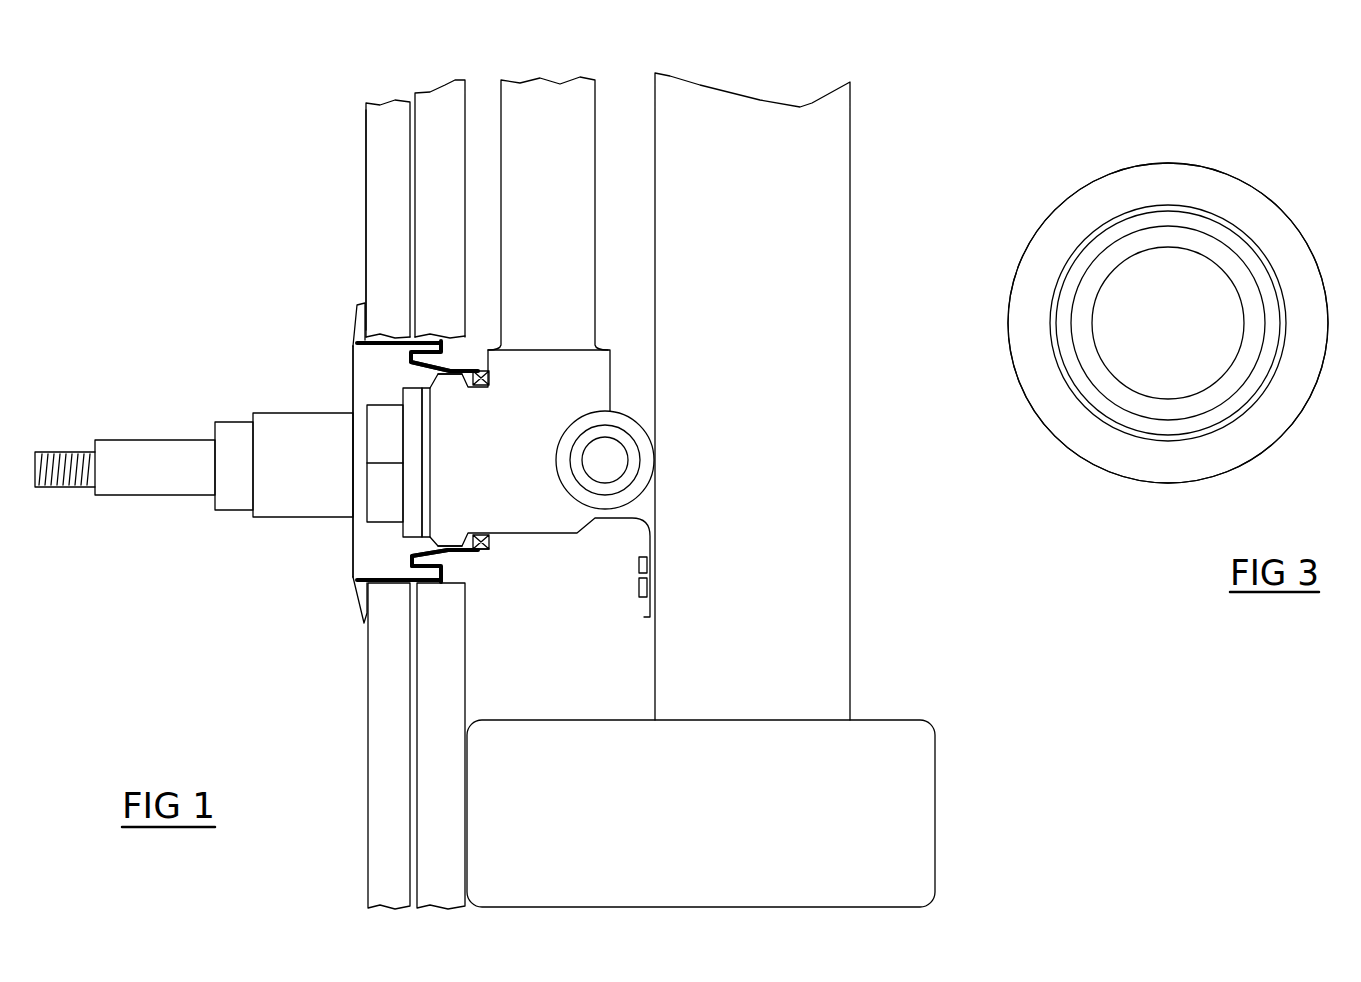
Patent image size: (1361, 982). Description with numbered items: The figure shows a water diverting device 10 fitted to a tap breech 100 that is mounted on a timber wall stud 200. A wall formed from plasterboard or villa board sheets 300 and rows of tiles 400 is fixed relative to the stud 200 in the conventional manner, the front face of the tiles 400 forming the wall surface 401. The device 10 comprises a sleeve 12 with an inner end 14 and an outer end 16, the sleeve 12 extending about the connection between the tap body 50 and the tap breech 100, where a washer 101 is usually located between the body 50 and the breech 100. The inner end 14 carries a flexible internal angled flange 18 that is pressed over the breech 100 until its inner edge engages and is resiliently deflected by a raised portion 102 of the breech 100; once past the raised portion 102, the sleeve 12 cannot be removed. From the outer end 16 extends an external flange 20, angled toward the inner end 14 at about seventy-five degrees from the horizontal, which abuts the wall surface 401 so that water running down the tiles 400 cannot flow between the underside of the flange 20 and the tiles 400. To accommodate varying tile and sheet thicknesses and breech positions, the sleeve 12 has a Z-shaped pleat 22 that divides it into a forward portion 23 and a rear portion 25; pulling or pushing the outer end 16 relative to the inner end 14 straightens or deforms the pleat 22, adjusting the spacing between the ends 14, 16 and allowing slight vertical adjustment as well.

In FIG. 1, the water diverting device 10 is at (263, 609).
In FIG. 3, the water diverting device 10 is at (1062, 468).
In FIG. 1, the sleeve 12 is at (458, 568).
In FIG. 1, the inner end 14 is at (491, 546).
In FIG. 1, the outer end 16 is at (352, 572).
In FIG. 1, the internal angled flange 18 is at (488, 385).
In FIG. 3, the internal angled flange 18 is at (1234, 266).
In FIG. 1, the external flange 20 is at (357, 317).
In FIG. 3, the external flange 20 is at (1182, 187).
In FIG. 1, the pleat 22 is at (434, 321).
In FIG. 3, the pleat 22 is at (1194, 225).
In FIG. 1, the forward portion 23 is at (383, 347).
In FIG. 1, the rear portion 25 is at (462, 363).
In FIG. 1, the tap body 50 is at (320, 483).
In FIG. 1, the tap breech 100 is at (543, 483).
In FIG. 1, the washer 101 is at (427, 553).
In FIG. 1, the raised portion 102 is at (450, 384).
In FIG. 1, the timber wall stud 200 is at (763, 483).
In FIG. 1, the plasterboard or villa board sheets 300 is at (437, 219).
In FIG. 1, the tiles 400 is at (383, 140).
In FIG. 1, the wall surface 401 is at (364, 175).